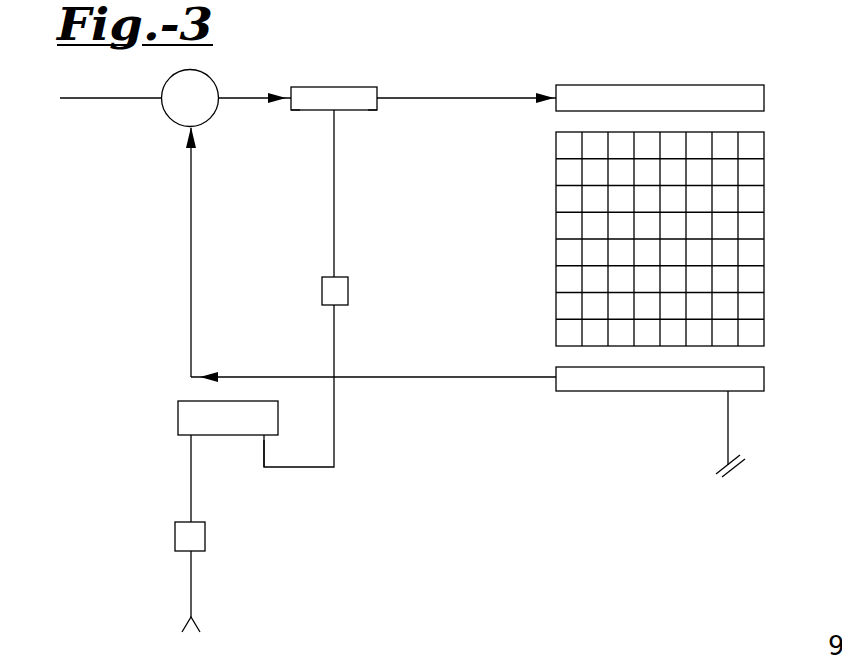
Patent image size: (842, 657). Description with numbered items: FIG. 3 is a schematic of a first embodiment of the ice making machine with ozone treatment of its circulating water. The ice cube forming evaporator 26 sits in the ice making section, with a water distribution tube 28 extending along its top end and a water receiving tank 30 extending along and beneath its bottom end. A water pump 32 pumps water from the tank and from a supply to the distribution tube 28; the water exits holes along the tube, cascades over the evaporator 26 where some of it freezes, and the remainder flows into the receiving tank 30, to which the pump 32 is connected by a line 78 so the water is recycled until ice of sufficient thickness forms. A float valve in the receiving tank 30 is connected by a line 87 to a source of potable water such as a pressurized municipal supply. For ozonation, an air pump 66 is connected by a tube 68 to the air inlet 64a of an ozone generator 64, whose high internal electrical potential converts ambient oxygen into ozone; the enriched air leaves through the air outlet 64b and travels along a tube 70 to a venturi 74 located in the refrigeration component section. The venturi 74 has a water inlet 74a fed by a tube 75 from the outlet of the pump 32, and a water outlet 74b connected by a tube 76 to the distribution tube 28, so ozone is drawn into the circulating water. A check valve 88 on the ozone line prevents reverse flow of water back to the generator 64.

The ice cube forming evaporator 26 is at (556, 250).
The water distribution tube 28 is at (660, 85).
The water receiving tank 30 is at (645, 392).
The water pump 32 is at (168, 118).
The ozone generator 64 is at (178, 400).
The air inlet 64a is at (190, 437).
The air outlet 64b is at (264, 437).
The air pump 66 is at (175, 542).
The tube 68 is at (190, 495).
The tube 70 is at (334, 438).
The venturi 74 is at (322, 87).
The water inlet 74a is at (292, 110).
The water outlet 74b is at (380, 110).
The tube 75 is at (236, 97).
The tube 76 is at (443, 97).
The line 78 is at (444, 376).
The line 87 is at (727, 437).
The check valve 88 is at (322, 277).